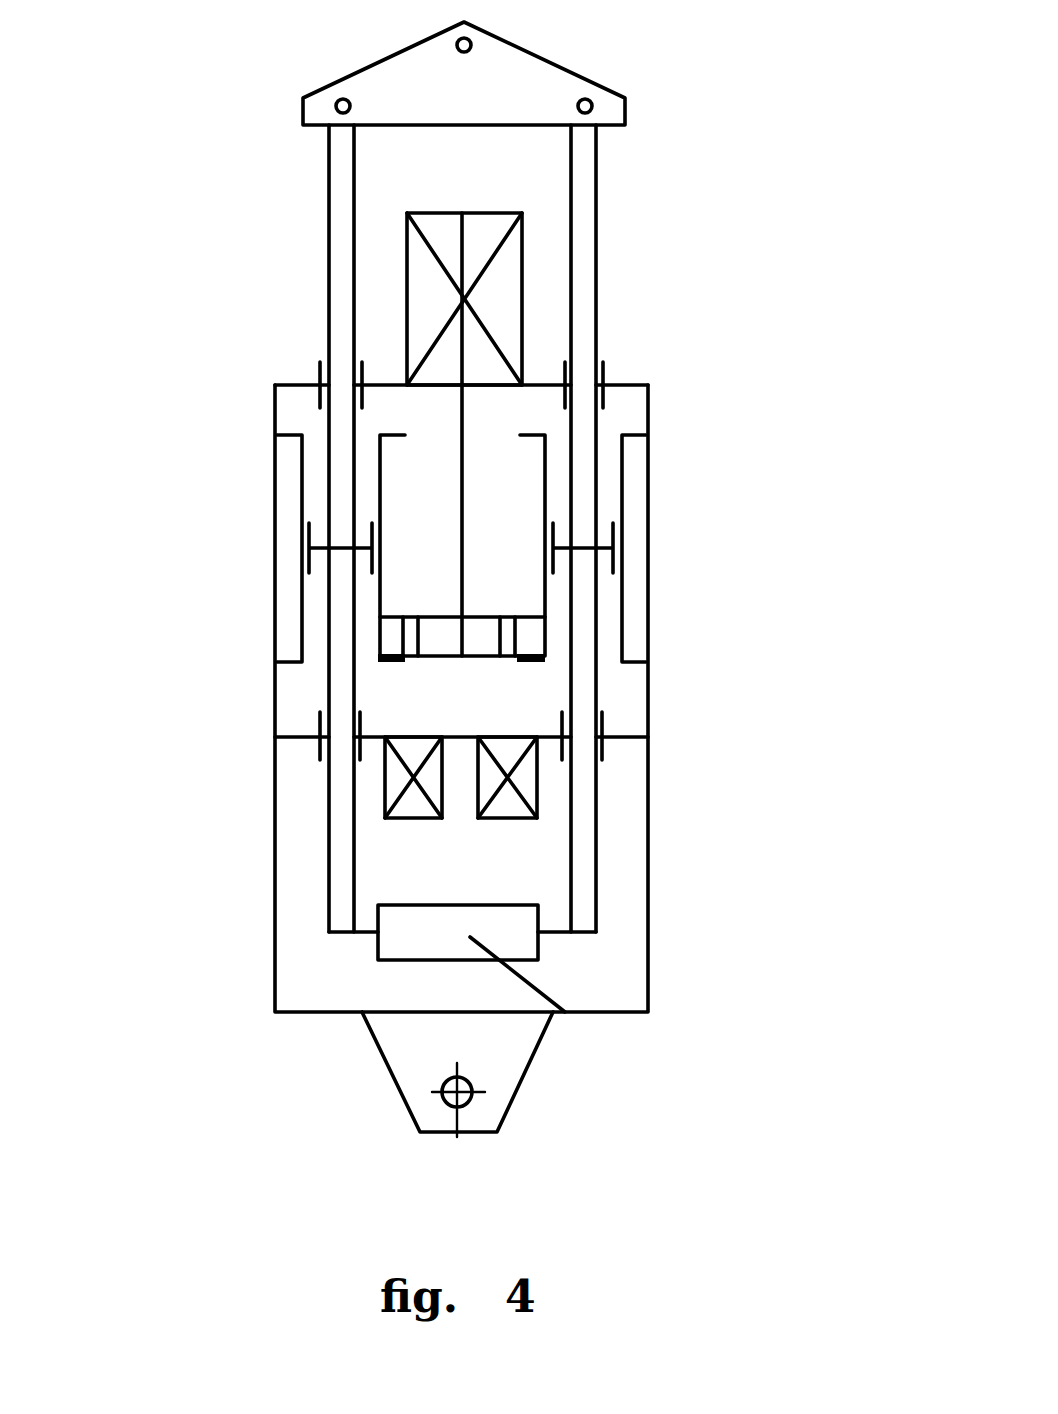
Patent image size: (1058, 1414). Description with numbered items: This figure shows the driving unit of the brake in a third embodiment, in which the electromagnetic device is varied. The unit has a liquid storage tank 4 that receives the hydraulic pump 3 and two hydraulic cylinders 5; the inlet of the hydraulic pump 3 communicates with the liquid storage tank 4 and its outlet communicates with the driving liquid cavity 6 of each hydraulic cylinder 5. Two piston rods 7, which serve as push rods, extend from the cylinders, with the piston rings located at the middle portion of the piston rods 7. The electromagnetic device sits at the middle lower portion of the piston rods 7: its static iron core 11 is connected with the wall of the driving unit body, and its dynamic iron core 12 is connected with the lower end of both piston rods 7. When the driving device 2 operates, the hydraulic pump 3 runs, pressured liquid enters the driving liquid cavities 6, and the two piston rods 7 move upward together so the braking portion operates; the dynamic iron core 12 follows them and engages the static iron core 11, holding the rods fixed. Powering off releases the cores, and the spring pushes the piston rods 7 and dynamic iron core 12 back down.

The driving device 2 is at (498, 317).
The hydraulic pump 3 is at (473, 642).
The liquid storage tank 4 is at (548, 478).
The hydraulic cylinder 5 is at (300, 477).
The driving liquid cavity 6 is at (318, 598).
The piston rod 7 is at (342, 227).
The static iron core 11 is at (412, 790).
The dynamic iron core 12 is at (405, 933).